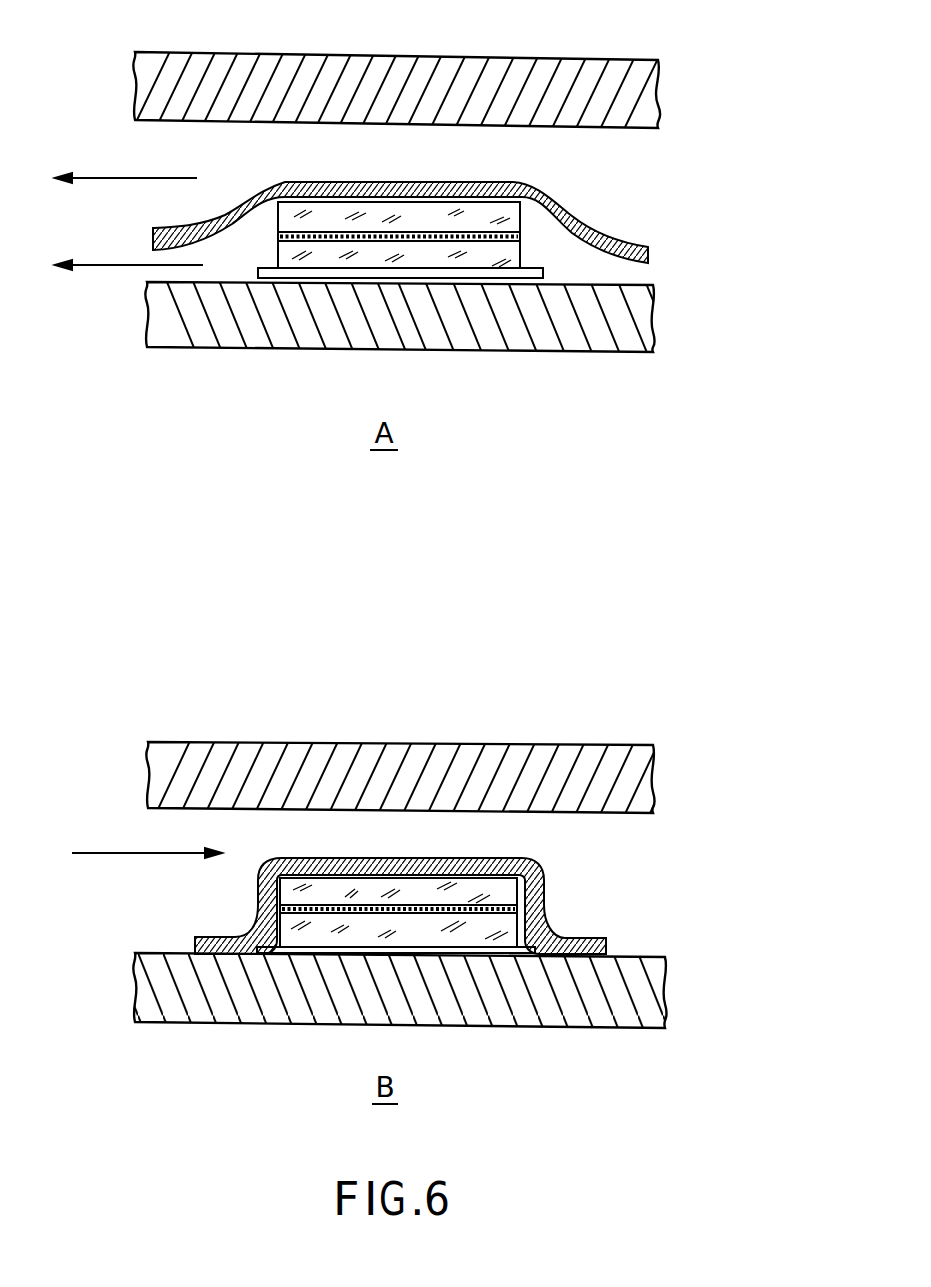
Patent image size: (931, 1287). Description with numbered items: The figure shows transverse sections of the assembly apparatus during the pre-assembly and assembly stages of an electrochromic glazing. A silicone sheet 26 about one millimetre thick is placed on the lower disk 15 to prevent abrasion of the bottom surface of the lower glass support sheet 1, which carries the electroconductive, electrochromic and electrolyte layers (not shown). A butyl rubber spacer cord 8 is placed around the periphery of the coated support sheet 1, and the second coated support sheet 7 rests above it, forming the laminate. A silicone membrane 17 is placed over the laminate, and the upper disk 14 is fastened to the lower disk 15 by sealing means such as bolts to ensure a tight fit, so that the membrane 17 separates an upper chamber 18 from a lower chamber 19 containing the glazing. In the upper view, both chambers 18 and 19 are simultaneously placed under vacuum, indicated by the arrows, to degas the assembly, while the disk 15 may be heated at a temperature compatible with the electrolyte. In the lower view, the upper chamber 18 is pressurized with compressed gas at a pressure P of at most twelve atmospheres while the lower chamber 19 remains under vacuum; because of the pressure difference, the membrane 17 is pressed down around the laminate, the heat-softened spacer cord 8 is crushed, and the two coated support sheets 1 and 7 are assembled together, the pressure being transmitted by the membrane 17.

In FIG. 6A, the upper disk 14 is at (548, 72).
In FIG. 6B, the upper disk 14 is at (544, 762).
In FIG. 6A, the lower disk 15 is at (536, 332).
In FIG. 6B, the lower disk 15 is at (525, 1003).
In FIG. 6A, the membrane 17 is at (565, 215).
In FIG. 6B, the membrane 17 is at (542, 893).
In FIG. 6A, the upper chamber 18 is at (279, 163).
In FIG. 6B, the upper chamber 18 is at (370, 847).
In FIG. 6A, the lower chamber 19 is at (266, 258).
In FIG. 6A, the second coated support sheet 7 is at (423, 228).
In FIG. 6B, the second coated support sheet 7 is at (402, 903).
In FIG. 6A, the butyl rubber spacer cord 8 is at (521, 237).
In FIG. 6B, the butyl rubber spacer cord 8 is at (540, 914).
In FIG. 6A, the lower glass support sheet 1 is at (423, 266).
In FIG. 6B, the lower glass support sheet 1 is at (398, 940).
In FIG. 6A, the silicone sheet 26 is at (545, 275).
In FIG. 6B, the silicone sheet 26 is at (242, 932).
In FIG. 6B, the pressure P is at (148, 846).